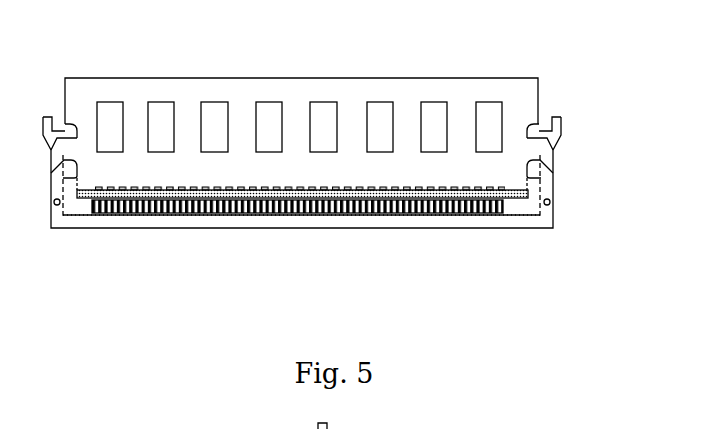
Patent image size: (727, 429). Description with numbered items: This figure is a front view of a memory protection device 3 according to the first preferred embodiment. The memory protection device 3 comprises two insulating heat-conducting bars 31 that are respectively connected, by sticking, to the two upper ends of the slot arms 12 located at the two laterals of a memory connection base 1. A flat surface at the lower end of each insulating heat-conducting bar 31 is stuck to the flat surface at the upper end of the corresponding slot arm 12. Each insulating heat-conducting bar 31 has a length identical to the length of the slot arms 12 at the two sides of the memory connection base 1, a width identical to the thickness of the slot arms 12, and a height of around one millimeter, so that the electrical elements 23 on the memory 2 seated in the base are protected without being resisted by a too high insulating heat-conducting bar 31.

The memory connection base 1 is at (547, 218).
The memory 2 is at (247, 95).
The memory protection device 3 is at (130, 188).
The slot arm 12 is at (510, 200).
The electrical element 23 is at (343, 188).
The insulating heat-conducting bar 31 is at (237, 192).